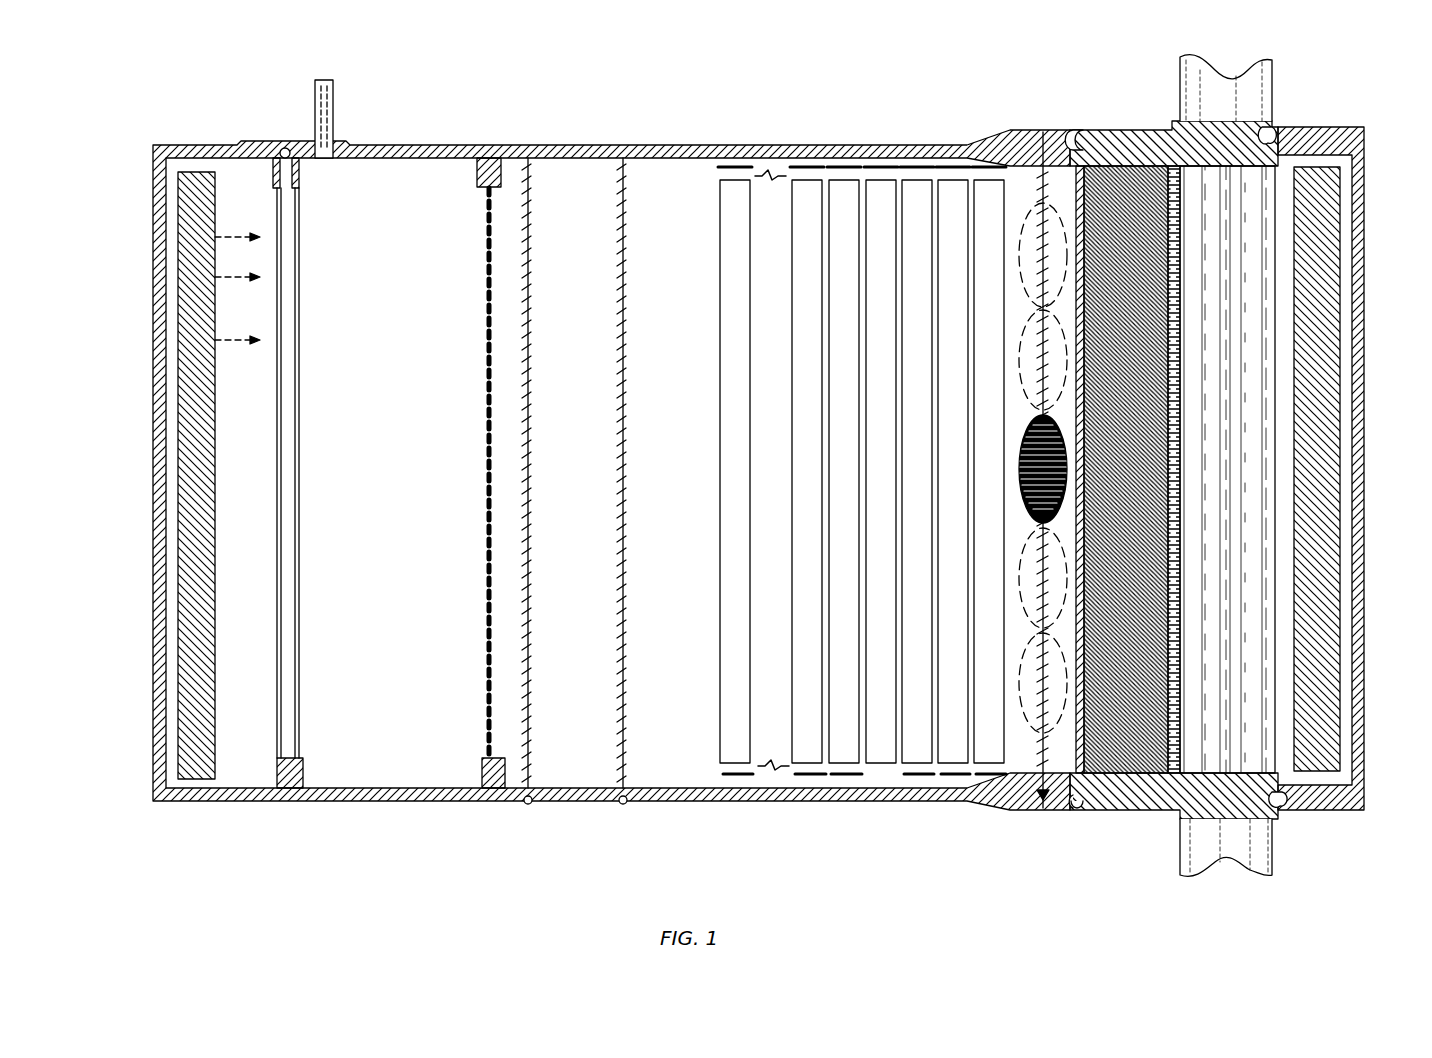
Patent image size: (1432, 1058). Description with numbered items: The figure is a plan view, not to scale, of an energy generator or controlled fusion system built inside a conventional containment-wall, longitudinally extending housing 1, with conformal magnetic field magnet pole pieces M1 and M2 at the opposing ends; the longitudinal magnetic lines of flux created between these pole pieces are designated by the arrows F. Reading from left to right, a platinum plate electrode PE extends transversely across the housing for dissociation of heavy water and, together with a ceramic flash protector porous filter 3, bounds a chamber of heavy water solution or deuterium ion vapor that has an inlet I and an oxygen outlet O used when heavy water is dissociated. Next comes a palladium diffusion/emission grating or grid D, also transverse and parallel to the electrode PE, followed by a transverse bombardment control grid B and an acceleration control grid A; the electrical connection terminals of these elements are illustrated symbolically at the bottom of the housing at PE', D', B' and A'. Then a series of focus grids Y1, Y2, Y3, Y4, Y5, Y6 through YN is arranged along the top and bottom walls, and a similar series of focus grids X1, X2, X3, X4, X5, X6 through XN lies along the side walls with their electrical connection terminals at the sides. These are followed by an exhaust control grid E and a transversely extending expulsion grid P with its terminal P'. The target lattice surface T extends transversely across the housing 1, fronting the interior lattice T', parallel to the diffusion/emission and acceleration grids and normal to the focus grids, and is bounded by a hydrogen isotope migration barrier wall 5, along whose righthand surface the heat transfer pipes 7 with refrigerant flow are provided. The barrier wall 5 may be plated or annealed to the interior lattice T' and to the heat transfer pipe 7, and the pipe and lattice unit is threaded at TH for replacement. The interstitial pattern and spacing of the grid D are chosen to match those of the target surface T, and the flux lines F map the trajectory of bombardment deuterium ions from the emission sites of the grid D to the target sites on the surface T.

The housing 1 is at (156, 390).
The flash protector porous filter 3 is at (299, 462).
The hydrogen isotope migration barrier wall 5 is at (1178, 612).
The heat transfer pipes 7 is at (1242, 220).
The oxygen outlet O is at (282, 148).
The inlet I is at (330, 95).
The magnet pole piece M1 is at (196, 208).
The magnet pole piece M2 is at (1312, 290).
The magnetic lines of flux F is at (230, 236).
The platinum plate electrode PE is at (186, 458).
The electrical connection terminal of platinum plate electrode PE' is at (256, 816).
The palladium diffusion/emission grating D is at (437, 458).
The electrical connection terminal of diffusion/emission grating D' is at (463, 816).
The bombardment control grid B is at (545, 437).
The electrical connection terminal of bombardment control grid B' is at (513, 843).
The acceleration control grid A is at (636, 440).
The electrical connection terminal of acceleration control grid A' is at (608, 843).
The focus grid Y1 is at (735, 185).
The focus grid Y2 is at (808, 185).
The focus grid Y3 is at (844, 185).
The focus grid Y4 is at (881, 185).
The focus grid Y5 is at (917, 185).
The focus grid Y6 is at (953, 185).
The focus grid YN is at (989, 185).
The focus grid X1 is at (738, 770).
The focus grid X2 is at (812, 770).
The focus grid X3 is at (849, 770).
The focus grid X4 is at (886, 770).
The focus grid X5 is at (922, 770).
The focus grid X6 is at (958, 770).
The focus grid XN is at (994, 770).
The expulsion grid P is at (1025, 434).
The electrical connection terminal of expulsion grid P' is at (1033, 836).
The exhaust control grid E is at (1021, 665).
The target lattice surface T is at (1248, 469).
The interior lattice T' is at (1247, 469).
The threads TH is at (1078, 132).